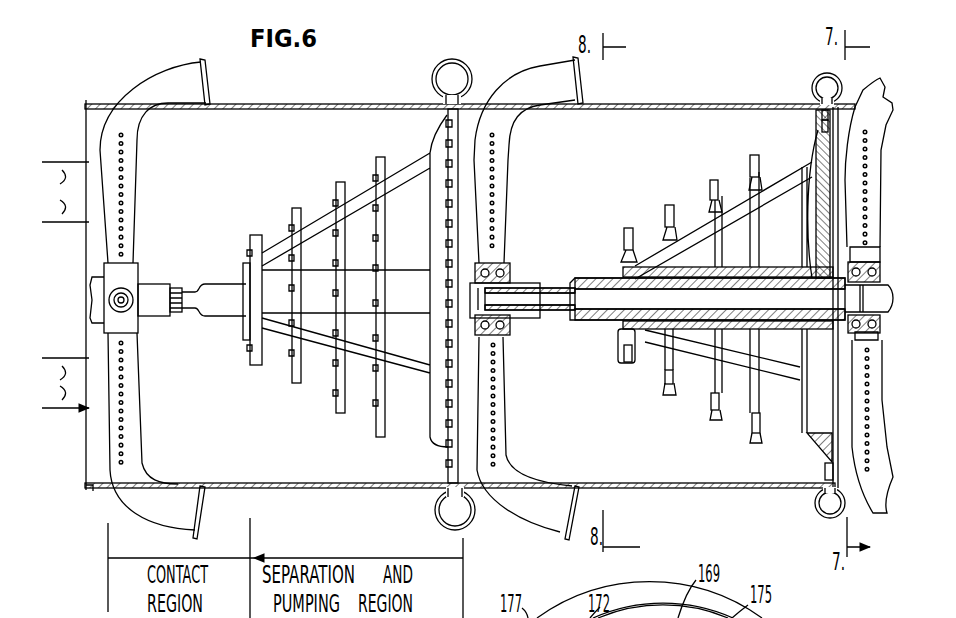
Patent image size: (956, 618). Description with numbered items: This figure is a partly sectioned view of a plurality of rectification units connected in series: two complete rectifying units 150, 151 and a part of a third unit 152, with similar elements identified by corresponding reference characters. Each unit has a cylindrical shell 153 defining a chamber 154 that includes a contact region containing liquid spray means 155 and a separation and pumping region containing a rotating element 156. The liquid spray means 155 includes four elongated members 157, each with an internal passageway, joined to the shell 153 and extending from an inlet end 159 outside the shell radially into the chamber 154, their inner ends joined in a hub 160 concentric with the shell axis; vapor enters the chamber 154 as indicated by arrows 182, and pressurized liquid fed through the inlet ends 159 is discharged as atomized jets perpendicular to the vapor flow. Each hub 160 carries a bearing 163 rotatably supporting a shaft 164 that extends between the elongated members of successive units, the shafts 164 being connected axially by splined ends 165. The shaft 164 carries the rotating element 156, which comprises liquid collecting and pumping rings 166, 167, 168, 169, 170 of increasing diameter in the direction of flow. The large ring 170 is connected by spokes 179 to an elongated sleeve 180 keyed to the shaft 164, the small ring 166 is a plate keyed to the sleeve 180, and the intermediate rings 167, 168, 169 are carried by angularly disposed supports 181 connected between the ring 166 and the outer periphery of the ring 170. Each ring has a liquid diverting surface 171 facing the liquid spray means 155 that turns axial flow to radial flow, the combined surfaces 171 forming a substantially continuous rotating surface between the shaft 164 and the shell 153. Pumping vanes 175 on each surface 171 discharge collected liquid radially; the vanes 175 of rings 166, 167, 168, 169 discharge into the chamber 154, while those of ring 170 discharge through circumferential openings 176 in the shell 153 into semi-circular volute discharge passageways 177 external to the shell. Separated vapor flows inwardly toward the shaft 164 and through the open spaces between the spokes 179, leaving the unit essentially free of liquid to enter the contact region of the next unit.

The rectifying unit 150 is at (330, 103).
The rectifying unit 151 is at (702, 82).
The third unit 152 is at (890, 96).
The cylindrical shell 153 is at (395, 104).
The chamber 154 is at (258, 141).
The liquid spray means 155 is at (137, 226).
The rotating element 156 is at (325, 205).
The elongated member 157 is at (140, 158).
The inlet end 159 is at (191, 66).
The hub 160 is at (134, 270).
The bearing 163 is at (510, 266).
The shaft 164 is at (226, 318).
The splined end 165 is at (178, 288).
The liquid collecting and pumping ring 166 is at (257, 368).
The liquid collecting and pumping ring 167 is at (296, 392).
The liquid collecting and pumping ring 168 is at (340, 418).
The liquid collecting and pumping ring 169 is at (380, 442).
The liquid collecting and pumping ring 170 is at (446, 456).
The liquid diverting surface 171 is at (665, 226).
The pumping vane 175 is at (670, 205).
The circumferential opening 176 is at (447, 112).
The semi-circular volute discharge passageway 177 is at (452, 70).
The spoke 179 is at (812, 214).
The elongated sleeve 180 is at (410, 269).
The angularly disposed support 181 is at (410, 167).
The arrows 182 is at (63, 285).